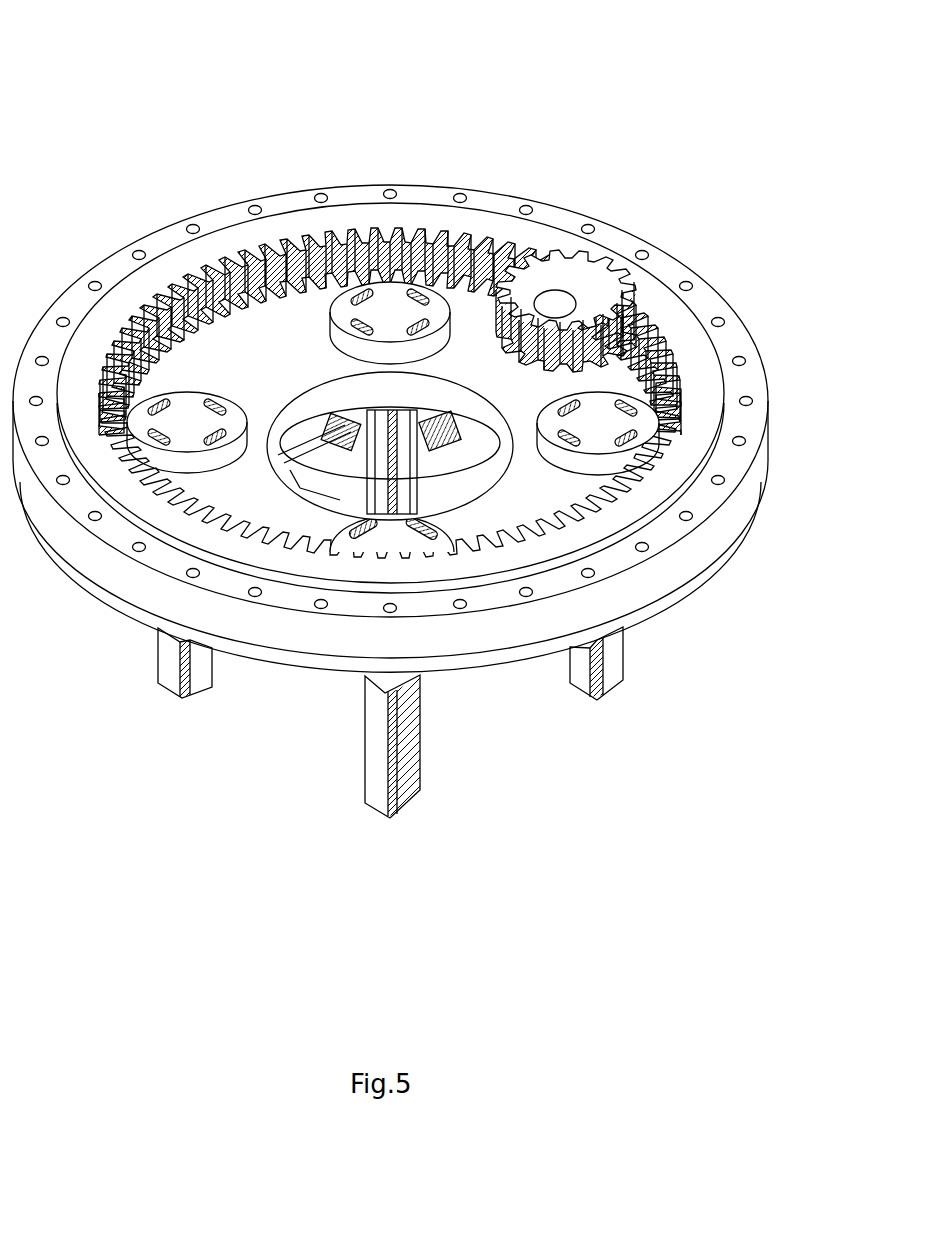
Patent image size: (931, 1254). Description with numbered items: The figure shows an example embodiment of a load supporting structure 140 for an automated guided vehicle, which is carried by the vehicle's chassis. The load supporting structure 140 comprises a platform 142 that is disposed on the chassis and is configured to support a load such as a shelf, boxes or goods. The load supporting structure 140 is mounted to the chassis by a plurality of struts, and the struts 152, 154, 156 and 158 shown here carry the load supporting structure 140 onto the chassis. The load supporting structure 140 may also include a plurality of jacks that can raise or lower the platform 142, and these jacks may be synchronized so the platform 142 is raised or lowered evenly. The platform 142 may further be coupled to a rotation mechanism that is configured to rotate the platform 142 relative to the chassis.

The load supporting structure 140 is at (183, 87).
The platform 142 is at (263, 343).
The strut 152 is at (395, 763).
The strut 154 is at (188, 675).
The strut 156 is at (394, 477).
The strut 158 is at (612, 677).